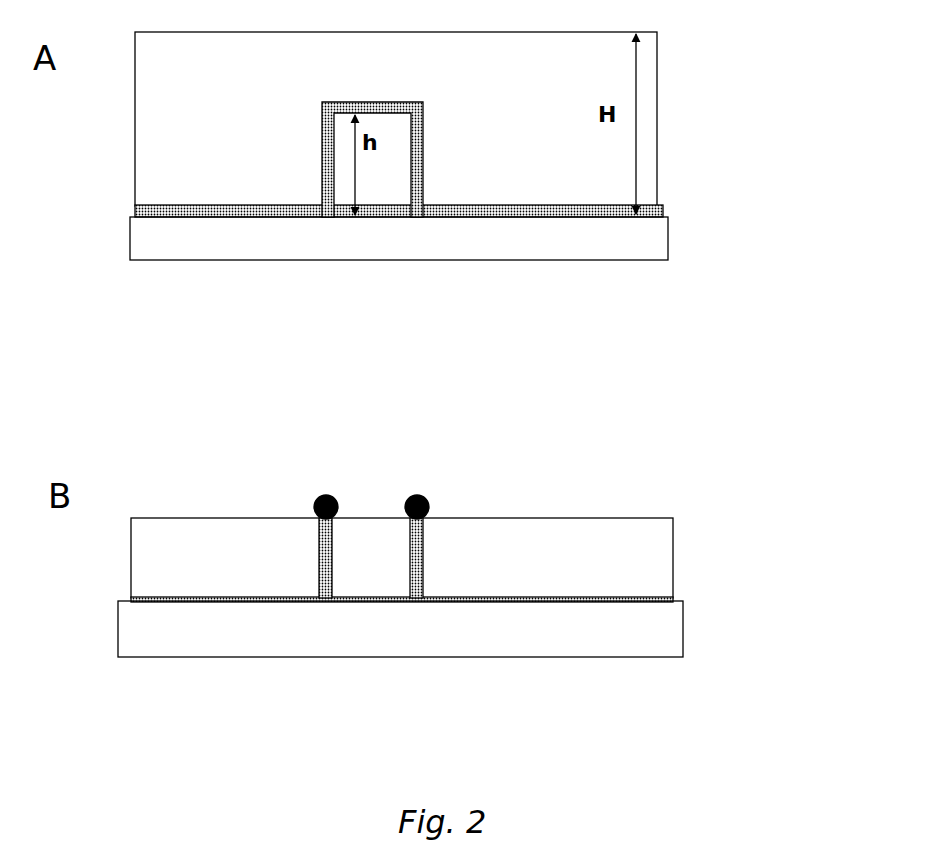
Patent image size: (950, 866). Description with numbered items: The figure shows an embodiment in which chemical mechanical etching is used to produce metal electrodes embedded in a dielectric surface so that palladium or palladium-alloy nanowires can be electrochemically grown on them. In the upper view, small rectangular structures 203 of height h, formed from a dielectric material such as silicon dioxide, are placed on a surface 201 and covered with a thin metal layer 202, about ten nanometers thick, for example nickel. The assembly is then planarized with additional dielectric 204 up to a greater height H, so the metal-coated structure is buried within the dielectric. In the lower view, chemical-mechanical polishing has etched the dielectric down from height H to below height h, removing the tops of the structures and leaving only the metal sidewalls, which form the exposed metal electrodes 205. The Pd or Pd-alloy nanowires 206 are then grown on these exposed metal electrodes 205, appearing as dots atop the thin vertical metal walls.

The surface 201 is at (497, 245).
The metal layer 202 is at (572, 218).
The small rectangular structures 203 is at (387, 190).
The additional dielectric 204 is at (485, 68).
The metal electrodes 205 is at (428, 508).
The Pd or Pd-alloy nanowires 206 is at (317, 503).